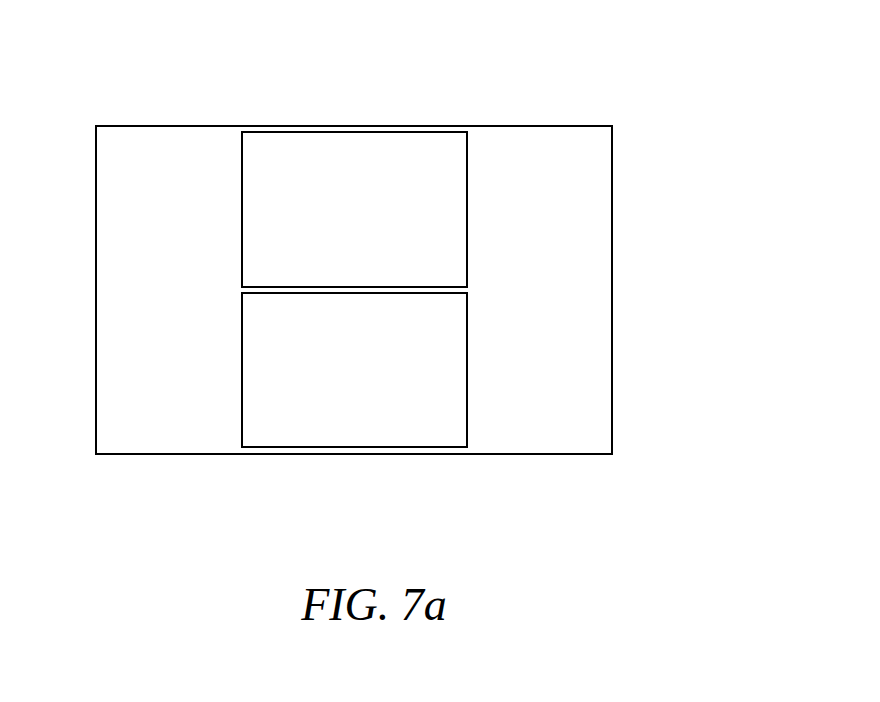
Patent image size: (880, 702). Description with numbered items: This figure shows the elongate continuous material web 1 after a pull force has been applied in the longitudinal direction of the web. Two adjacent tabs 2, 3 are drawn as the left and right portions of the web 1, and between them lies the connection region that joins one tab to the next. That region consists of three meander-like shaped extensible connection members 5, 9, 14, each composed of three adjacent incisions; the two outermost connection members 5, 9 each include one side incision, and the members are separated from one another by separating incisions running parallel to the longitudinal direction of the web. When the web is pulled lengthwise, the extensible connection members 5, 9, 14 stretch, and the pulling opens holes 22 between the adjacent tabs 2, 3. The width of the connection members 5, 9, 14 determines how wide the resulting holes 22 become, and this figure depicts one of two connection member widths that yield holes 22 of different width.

The elongate continuous material web 1 is at (620, 123).
The tab 2 is at (160, 308).
The tab 3 is at (525, 308).
The extensible connection member 5 is at (412, 128).
The extensible connection member 9 is at (296, 456).
The extensible connection member 14 is at (347, 292).
The hole 22 is at (310, 178).